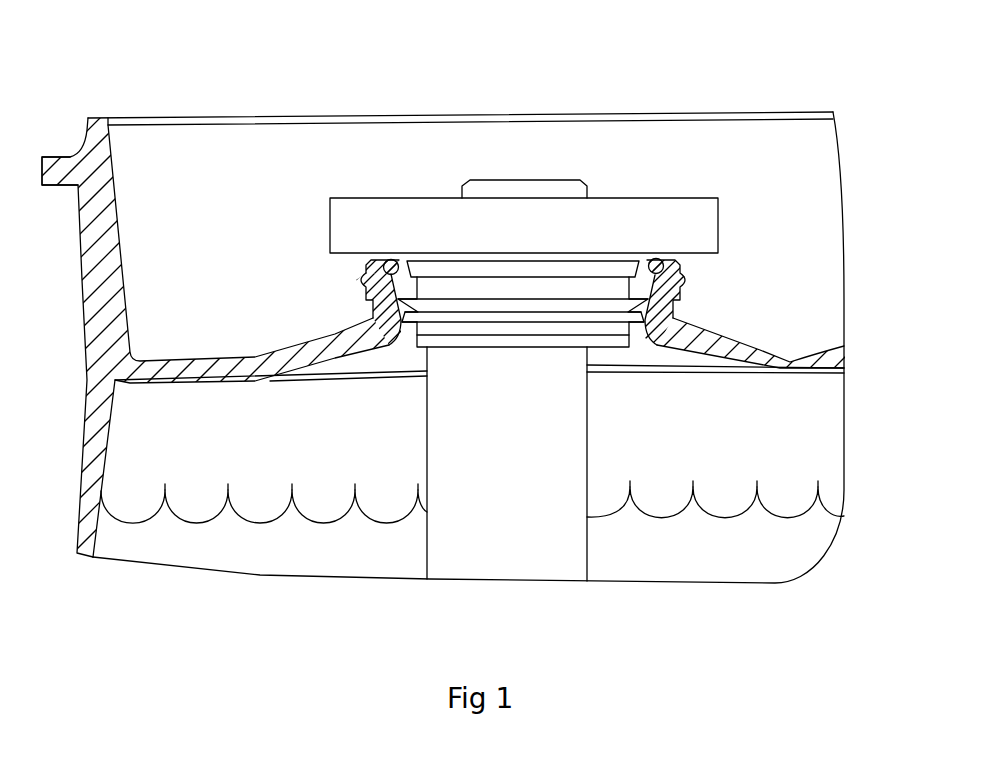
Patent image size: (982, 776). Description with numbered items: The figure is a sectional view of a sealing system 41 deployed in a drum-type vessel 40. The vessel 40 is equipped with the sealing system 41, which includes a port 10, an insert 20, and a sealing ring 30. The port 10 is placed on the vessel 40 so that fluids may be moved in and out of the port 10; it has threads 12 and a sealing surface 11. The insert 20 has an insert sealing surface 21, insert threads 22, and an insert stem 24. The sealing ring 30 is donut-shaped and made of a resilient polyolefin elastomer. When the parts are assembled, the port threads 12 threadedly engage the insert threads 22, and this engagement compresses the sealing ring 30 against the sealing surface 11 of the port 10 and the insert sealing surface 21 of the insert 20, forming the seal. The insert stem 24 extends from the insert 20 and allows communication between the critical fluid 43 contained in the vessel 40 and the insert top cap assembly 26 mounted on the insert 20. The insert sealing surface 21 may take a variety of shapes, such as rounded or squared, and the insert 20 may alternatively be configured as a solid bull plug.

The port 10 is at (620, 333).
The sealing surface 11 is at (365, 262).
The threads 12 is at (366, 292).
The insert 20 is at (380, 152).
The insert sealing surface 21 is at (402, 263).
The insert threads 22 is at (490, 318).
The insert stem 24 is at (588, 453).
The insert top cap assembly 26 is at (645, 198).
The sealing ring 30 is at (684, 262).
The vessel 40 is at (163, 117).
The sealing system 41 is at (63, 156).
The critical fluid 43 is at (177, 512).